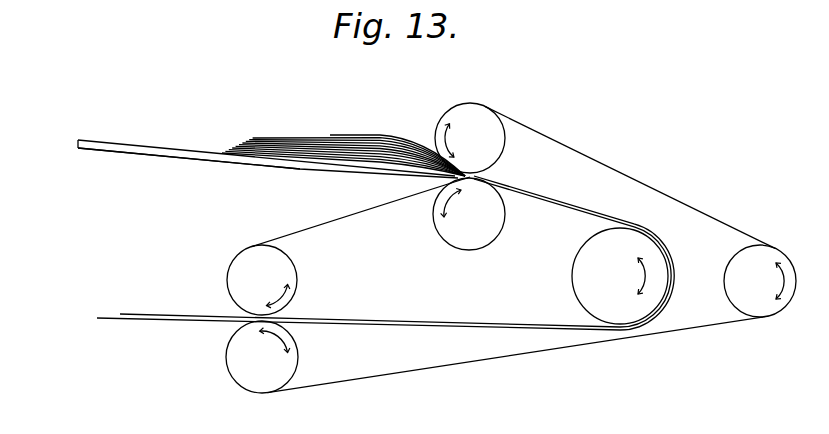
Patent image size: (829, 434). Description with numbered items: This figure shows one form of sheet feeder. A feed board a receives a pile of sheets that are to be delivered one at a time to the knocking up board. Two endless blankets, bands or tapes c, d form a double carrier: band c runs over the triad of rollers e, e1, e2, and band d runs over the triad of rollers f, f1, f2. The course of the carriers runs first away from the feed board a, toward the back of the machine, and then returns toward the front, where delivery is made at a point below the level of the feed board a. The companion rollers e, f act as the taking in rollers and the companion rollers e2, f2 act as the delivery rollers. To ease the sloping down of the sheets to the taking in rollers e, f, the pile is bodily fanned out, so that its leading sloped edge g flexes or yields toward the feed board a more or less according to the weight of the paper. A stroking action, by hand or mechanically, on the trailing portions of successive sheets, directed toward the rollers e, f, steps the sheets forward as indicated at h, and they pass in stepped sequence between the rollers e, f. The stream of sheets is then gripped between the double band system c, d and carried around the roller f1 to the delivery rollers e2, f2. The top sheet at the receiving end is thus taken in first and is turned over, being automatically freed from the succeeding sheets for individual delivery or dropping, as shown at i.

The feed board a is at (215, 160).
The stepped sheets h is at (300, 142).
The leading sloped edge of the pile g is at (382, 162).
The taking in roller e is at (470, 138).
The taking in roller f is at (469, 214).
The roller f1 is at (620, 276).
The roller e1 is at (760, 281).
The delivery roller f2 is at (262, 280).
The delivery roller e2 is at (262, 357).
The endless band carrier c is at (532, 128).
The endless band carrier d is at (533, 202).
The individual sheet delivery i is at (120, 322).